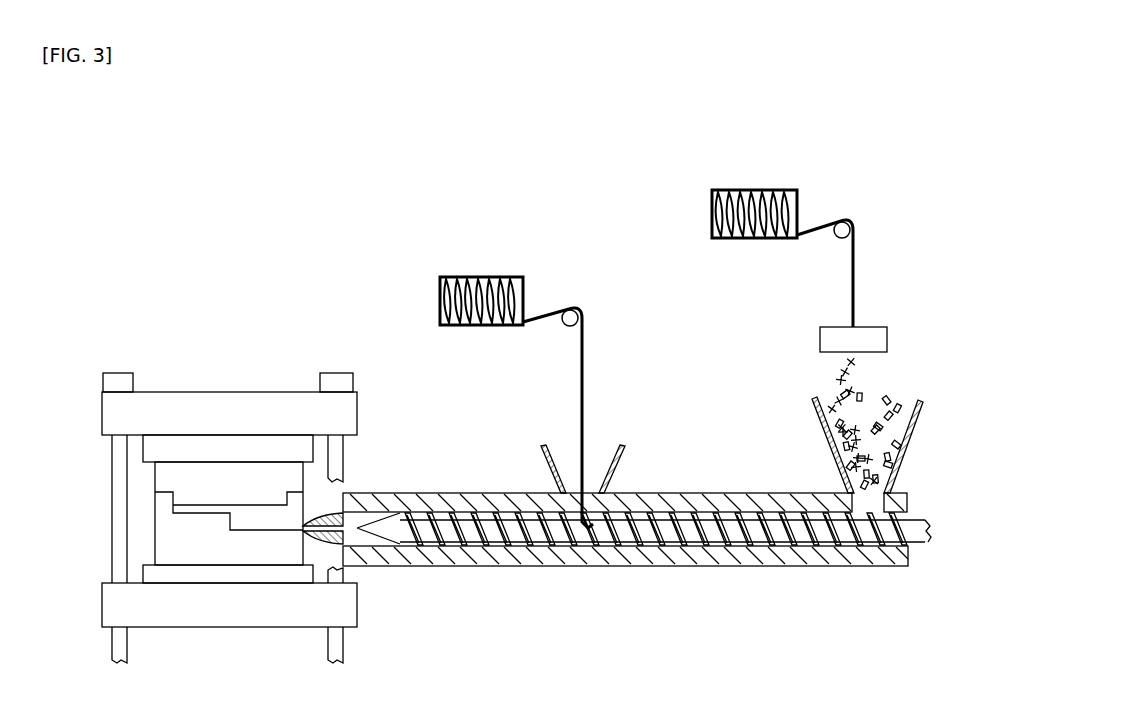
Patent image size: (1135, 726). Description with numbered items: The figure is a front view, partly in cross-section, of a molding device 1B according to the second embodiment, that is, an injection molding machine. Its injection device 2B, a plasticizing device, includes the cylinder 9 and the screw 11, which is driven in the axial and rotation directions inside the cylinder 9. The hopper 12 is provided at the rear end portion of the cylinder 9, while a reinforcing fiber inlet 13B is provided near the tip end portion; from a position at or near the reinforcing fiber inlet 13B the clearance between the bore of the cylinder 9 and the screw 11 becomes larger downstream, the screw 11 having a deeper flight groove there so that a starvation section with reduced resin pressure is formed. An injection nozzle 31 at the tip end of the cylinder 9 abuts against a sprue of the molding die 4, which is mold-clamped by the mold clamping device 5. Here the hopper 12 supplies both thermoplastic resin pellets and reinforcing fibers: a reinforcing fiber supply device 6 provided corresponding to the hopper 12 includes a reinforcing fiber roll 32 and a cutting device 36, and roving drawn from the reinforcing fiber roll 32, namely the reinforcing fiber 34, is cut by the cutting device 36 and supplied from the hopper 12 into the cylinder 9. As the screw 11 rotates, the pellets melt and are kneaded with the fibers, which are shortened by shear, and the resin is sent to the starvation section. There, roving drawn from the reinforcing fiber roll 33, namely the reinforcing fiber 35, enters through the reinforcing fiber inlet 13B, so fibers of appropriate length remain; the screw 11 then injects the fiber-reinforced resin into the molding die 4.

The molding device 1B is at (230, 195).
The mold clamping device 5 is at (183, 392).
The molding die 4 is at (258, 480).
The injection device 2B is at (727, 493).
The cylinder 9 is at (433, 493).
The screw 11 is at (702, 537).
The injection nozzle 31 is at (330, 550).
The reinforcing fiber inlet 13B is at (540, 452).
The hopper 12 is at (922, 413).
The reinforcing fiber roll 33 is at (485, 277).
The reinforcing fiber 35 is at (587, 365).
The reinforcing fiber supply device 6 is at (869, 198).
The reinforcing fiber roll 32 is at (748, 190).
The reinforcing fiber 34 is at (857, 257).
The cutting device 36 is at (820, 338).